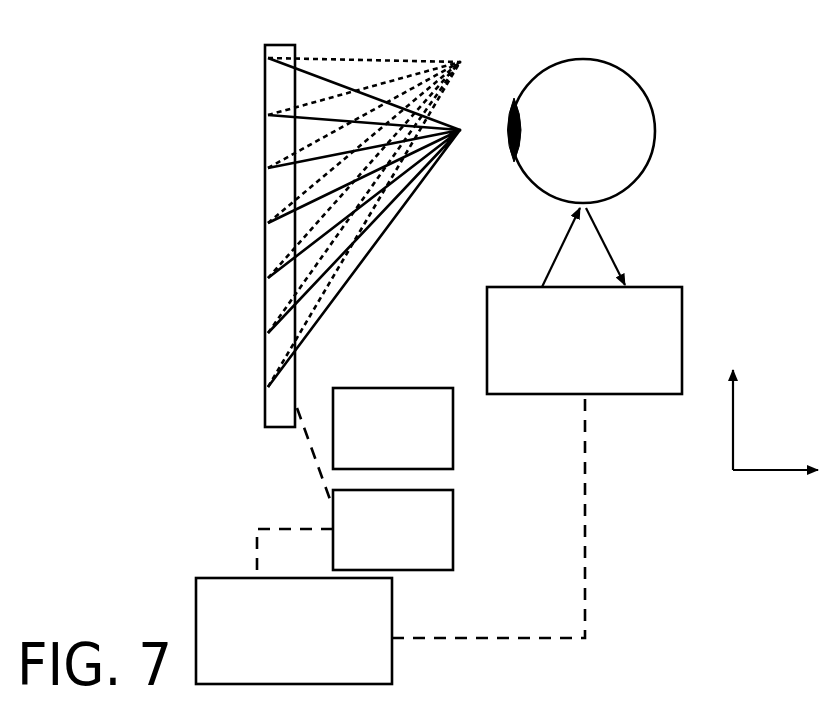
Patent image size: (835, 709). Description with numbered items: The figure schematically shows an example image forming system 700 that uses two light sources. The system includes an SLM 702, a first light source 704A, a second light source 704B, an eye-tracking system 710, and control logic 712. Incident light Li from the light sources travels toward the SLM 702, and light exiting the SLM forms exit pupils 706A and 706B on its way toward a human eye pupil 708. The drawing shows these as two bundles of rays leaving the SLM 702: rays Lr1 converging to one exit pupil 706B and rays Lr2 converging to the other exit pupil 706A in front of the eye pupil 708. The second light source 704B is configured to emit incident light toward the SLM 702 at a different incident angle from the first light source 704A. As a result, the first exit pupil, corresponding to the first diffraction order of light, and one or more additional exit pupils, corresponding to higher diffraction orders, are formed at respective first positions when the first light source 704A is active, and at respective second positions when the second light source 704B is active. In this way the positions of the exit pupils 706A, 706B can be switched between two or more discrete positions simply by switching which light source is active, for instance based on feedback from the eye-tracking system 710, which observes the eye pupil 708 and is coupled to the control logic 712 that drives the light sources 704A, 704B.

The image forming system 700 is at (110, 242).
The spatial light modulator 702 is at (264, 80).
The first light source 704A is at (370, 462).
The second light source 704B is at (370, 564).
The first exit pupil 706A is at (462, 62).
The second exit pupil 706B is at (476, 116).
The human eye pupil 708 is at (507, 143).
The eye-tracking system 710 is at (660, 367).
The control logic 712 is at (358, 657).
The first light rays Lr1 is at (392, 252).
The second light rays Lr2 is at (375, 53).
The incident light Li is at (310, 438).